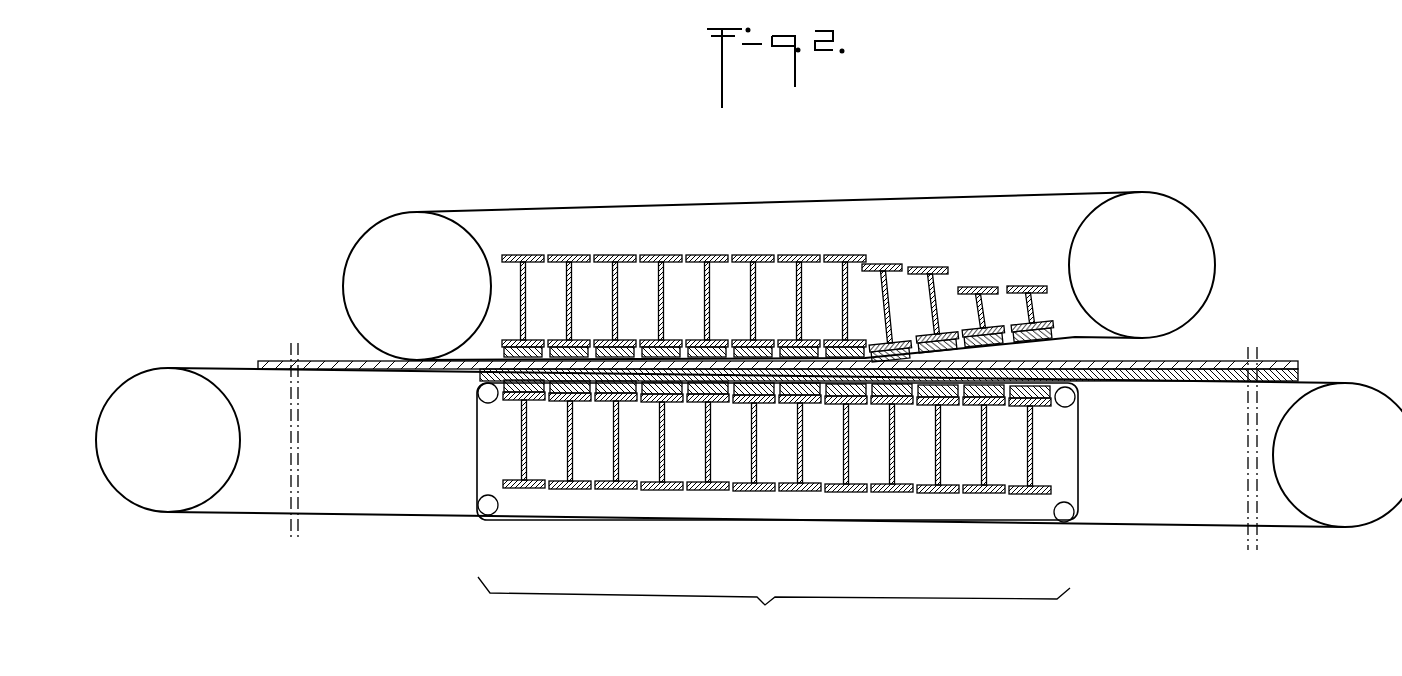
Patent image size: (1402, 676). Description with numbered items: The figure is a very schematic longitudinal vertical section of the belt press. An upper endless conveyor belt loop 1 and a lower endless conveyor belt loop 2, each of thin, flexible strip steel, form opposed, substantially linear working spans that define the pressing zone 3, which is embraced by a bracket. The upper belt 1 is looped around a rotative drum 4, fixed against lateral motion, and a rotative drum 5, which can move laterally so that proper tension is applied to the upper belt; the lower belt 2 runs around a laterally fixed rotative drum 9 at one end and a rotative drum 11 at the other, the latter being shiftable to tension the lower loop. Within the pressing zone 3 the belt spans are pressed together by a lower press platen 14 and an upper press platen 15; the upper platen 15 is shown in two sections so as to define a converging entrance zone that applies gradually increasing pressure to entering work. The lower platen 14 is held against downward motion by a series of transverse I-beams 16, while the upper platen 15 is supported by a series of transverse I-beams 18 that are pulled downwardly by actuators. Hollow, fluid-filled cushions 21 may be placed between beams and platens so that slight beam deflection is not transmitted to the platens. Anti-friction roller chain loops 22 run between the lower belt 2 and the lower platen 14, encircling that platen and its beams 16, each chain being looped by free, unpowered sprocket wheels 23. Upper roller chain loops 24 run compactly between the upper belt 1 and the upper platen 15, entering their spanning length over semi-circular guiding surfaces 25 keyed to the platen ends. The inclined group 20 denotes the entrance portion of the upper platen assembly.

The upper endless conveyor belt loop 1 is at (938, 198).
The lower endless conveyor belt loop 2 is at (1162, 528).
The pressing zone 3 is at (774, 606).
The rotative drum 4 is at (1202, 290).
The rotative drum 5 is at (400, 228).
The rotative drum 9 is at (1360, 408).
The rotative drum 11 is at (167, 388).
The lower press platen 14 is at (1038, 410).
The upper press platen 15 is at (1050, 336).
The transverse I-beams 16 is at (537, 490).
The transverse I-beams 18 is at (617, 252).
The inclined support beam group 20 is at (862, 247).
The hollow cushions 21 is at (650, 403).
The roller chain loops 22 is at (1080, 465).
The looping sprocket wheels 23 is at (477, 405).
The upper roller chain loops 24 is at (467, 378).
The semi-circular guiding surfaces 25 is at (1110, 344).